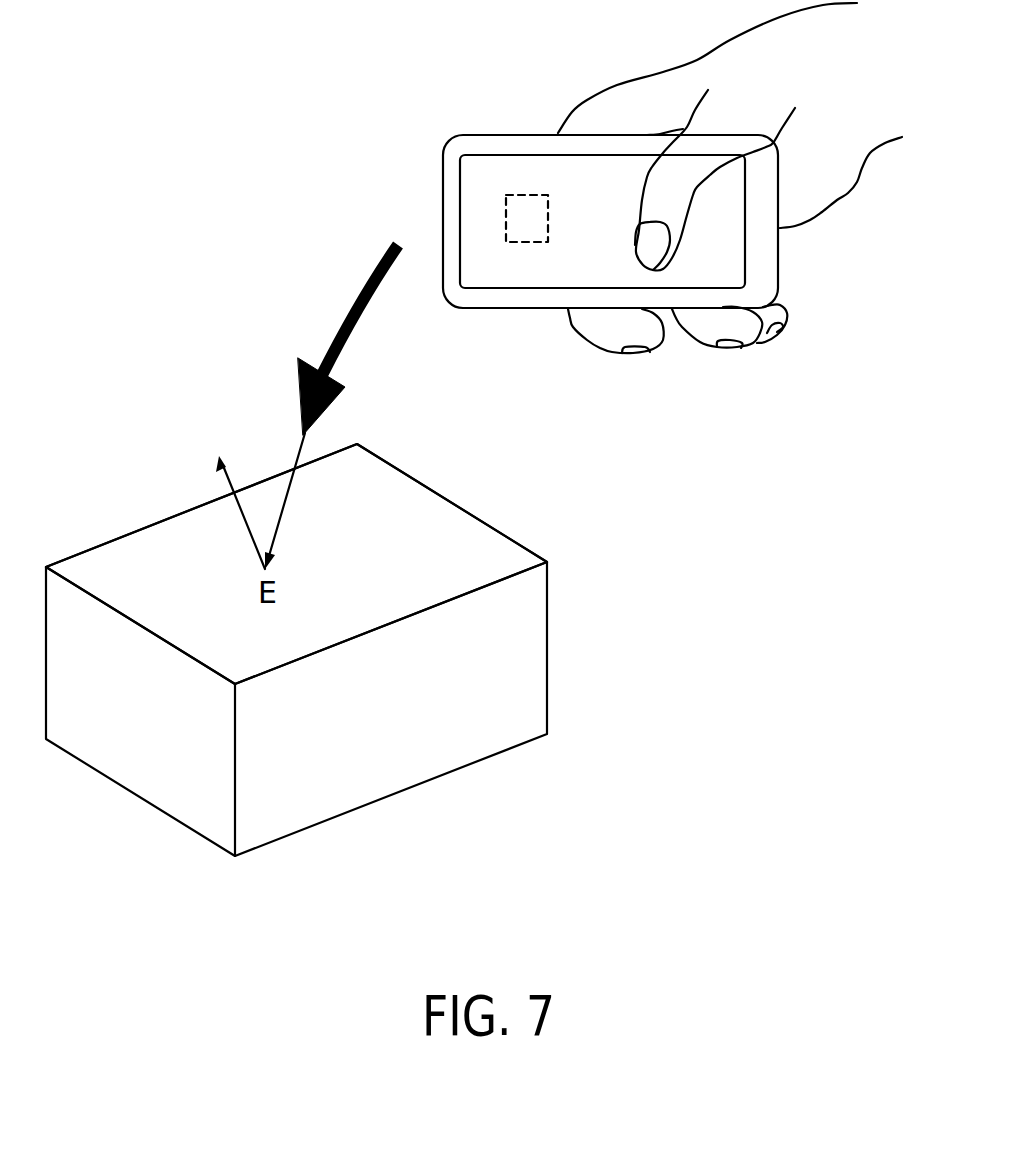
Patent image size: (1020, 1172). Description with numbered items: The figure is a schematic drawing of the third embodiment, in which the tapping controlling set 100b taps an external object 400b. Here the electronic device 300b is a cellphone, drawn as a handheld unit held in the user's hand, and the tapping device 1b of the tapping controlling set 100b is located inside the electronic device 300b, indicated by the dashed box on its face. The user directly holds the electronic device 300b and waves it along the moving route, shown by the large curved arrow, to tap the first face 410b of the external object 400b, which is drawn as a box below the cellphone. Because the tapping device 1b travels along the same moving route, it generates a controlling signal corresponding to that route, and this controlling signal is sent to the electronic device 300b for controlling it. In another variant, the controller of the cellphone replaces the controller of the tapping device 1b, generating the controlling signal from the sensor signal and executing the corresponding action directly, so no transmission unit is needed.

The tapping device 1b is at (520, 205).
The tapping controlling set 100b is at (479, 186).
The electronic device 300b is at (510, 298).
The external object 400b is at (166, 793).
The first face 410b is at (91, 550).